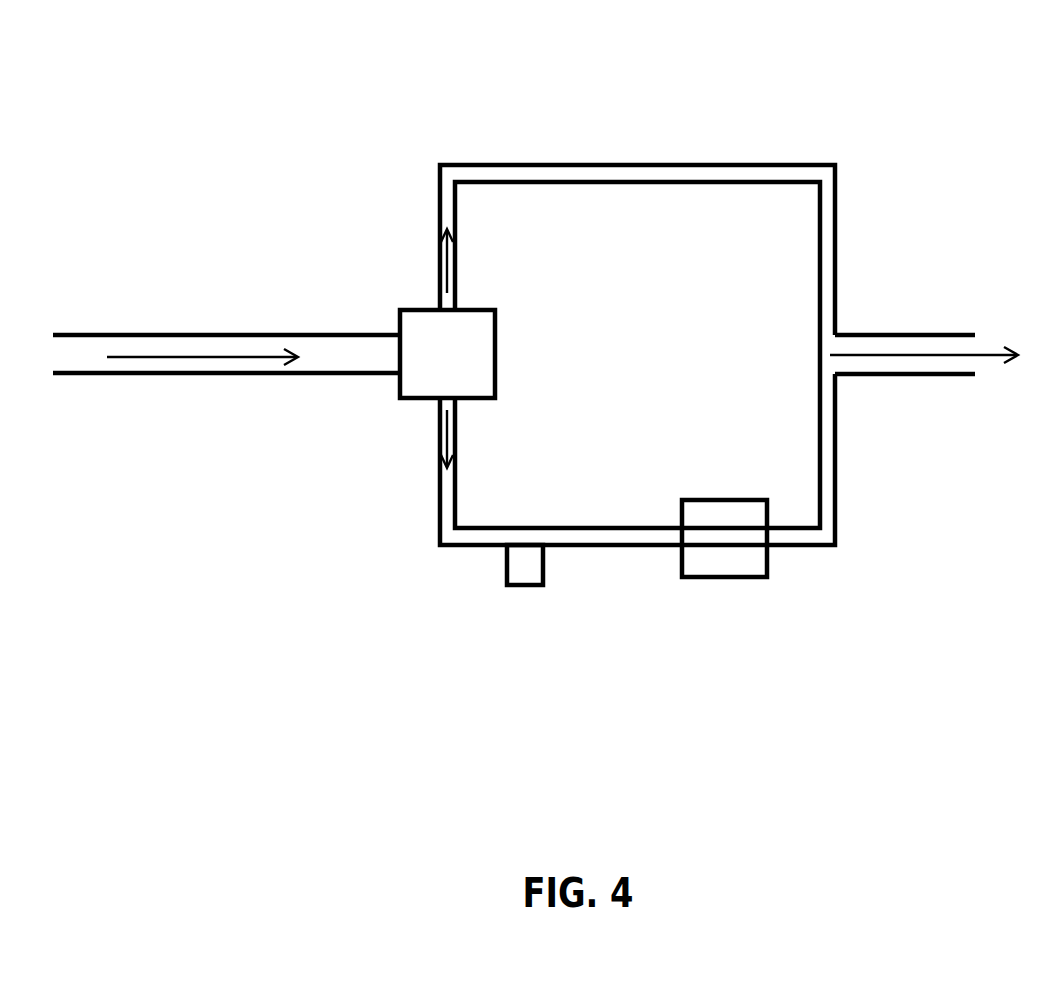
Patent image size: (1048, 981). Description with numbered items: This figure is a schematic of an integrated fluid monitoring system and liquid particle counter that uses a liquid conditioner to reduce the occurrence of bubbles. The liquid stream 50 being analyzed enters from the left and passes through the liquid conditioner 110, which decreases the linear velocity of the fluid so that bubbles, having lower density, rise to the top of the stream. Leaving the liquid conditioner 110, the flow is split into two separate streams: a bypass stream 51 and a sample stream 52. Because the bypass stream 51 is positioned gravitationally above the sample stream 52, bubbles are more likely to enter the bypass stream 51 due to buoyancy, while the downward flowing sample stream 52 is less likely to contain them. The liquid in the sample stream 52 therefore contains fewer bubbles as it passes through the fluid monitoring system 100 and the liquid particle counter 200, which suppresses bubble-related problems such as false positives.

The liquid stream 50 is at (173, 355).
The bypass stream 51 is at (468, 170).
The sample stream 52 is at (440, 543).
The liquid conditioner 110 is at (443, 382).
The fluid monitoring system 100 is at (520, 567).
The liquid particle counter 200 is at (730, 550).